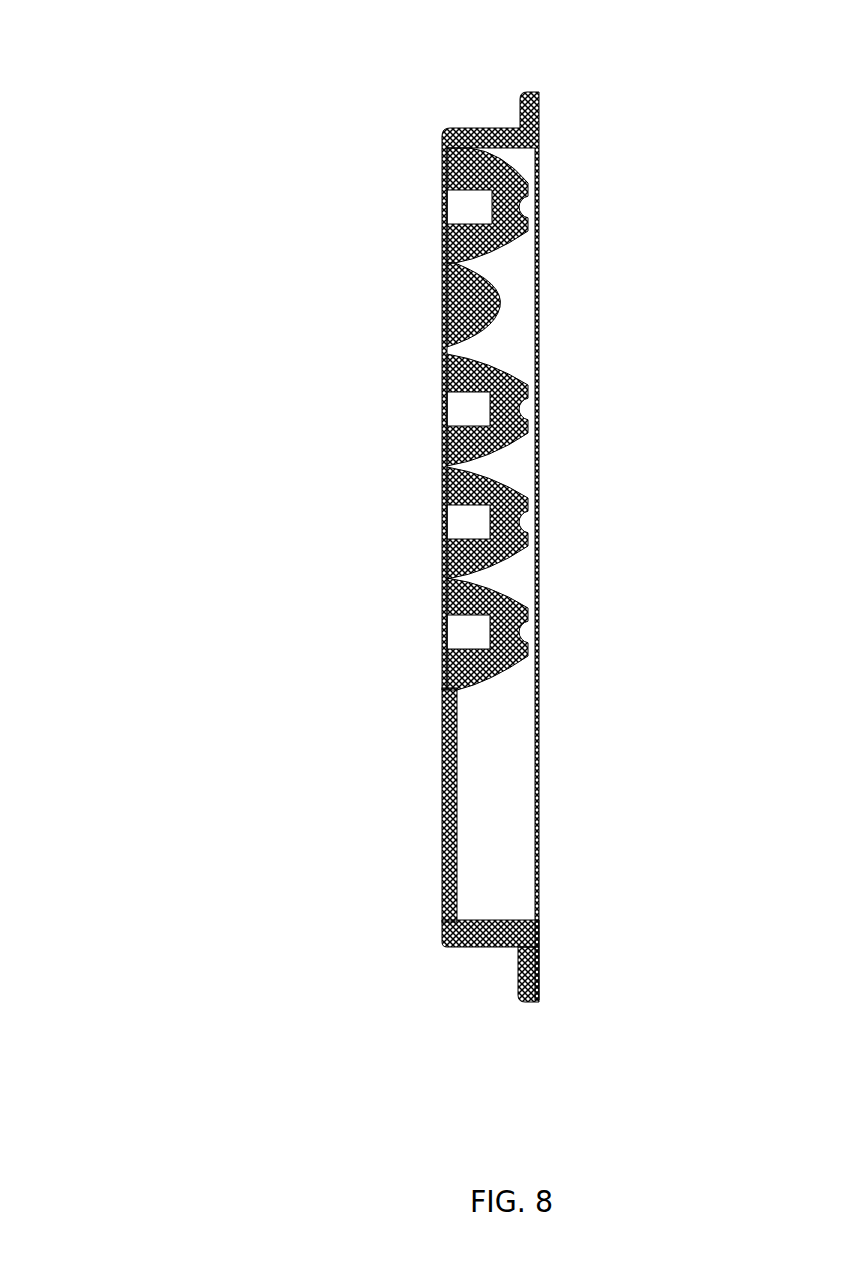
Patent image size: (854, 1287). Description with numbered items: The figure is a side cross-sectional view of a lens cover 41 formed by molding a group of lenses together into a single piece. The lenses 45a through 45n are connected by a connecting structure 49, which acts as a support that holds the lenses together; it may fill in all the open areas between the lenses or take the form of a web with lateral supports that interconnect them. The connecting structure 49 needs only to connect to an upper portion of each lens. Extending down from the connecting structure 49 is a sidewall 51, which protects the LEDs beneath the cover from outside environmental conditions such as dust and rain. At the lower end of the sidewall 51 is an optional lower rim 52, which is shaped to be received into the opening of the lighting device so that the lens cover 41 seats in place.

The lens cover 41 is at (172, 334).
The lens 45a is at (442, 170).
The lens 45n is at (465, 693).
The connecting structure 49 is at (442, 806).
The sidewall 51 is at (465, 938).
The lower rim 52 is at (539, 1000).